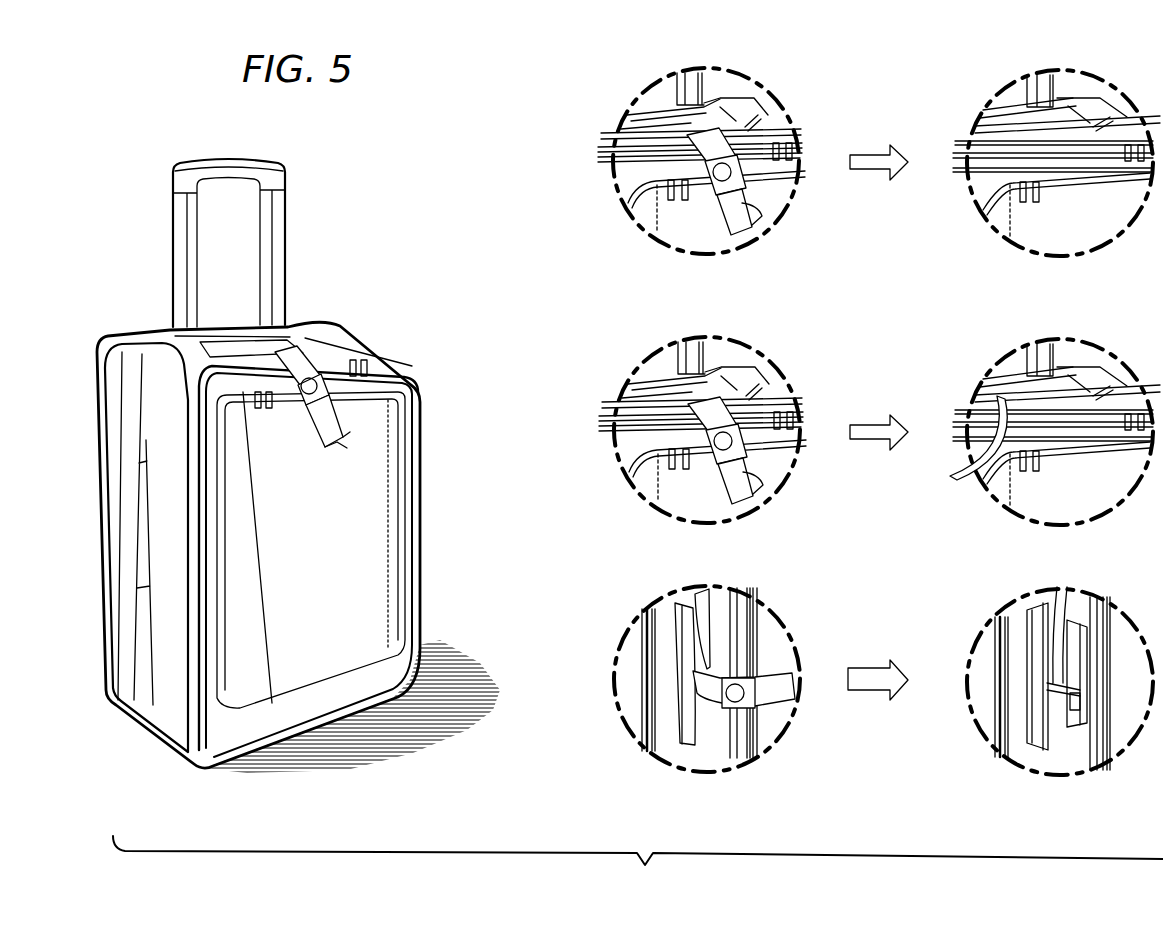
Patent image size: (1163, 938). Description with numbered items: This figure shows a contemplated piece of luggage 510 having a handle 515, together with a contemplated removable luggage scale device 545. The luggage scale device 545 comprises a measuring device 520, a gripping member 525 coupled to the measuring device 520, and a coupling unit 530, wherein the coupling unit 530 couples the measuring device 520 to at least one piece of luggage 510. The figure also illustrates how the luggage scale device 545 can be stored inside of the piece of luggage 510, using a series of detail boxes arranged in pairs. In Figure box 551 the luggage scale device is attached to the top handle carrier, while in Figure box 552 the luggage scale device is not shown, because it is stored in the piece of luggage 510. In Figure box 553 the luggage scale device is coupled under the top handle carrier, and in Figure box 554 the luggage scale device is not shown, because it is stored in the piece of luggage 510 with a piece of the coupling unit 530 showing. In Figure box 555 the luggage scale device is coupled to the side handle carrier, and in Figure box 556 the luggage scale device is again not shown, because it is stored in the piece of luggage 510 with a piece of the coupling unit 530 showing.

The piece of luggage 510 is at (432, 580).
The handle 515 is at (285, 240).
The measuring device 520 is at (313, 381).
The gripping member 525 is at (337, 414).
The coupling unit 530 is at (293, 353).
The removable luggage scale device 545 is at (338, 454).
The Figure box 551 is at (637, 95).
The Figure box 552 is at (990, 93).
The Figure box 553 is at (637, 364).
The Figure box 554 is at (990, 362).
The Figure box 555 is at (637, 598).
The Figure box 556 is at (990, 605).